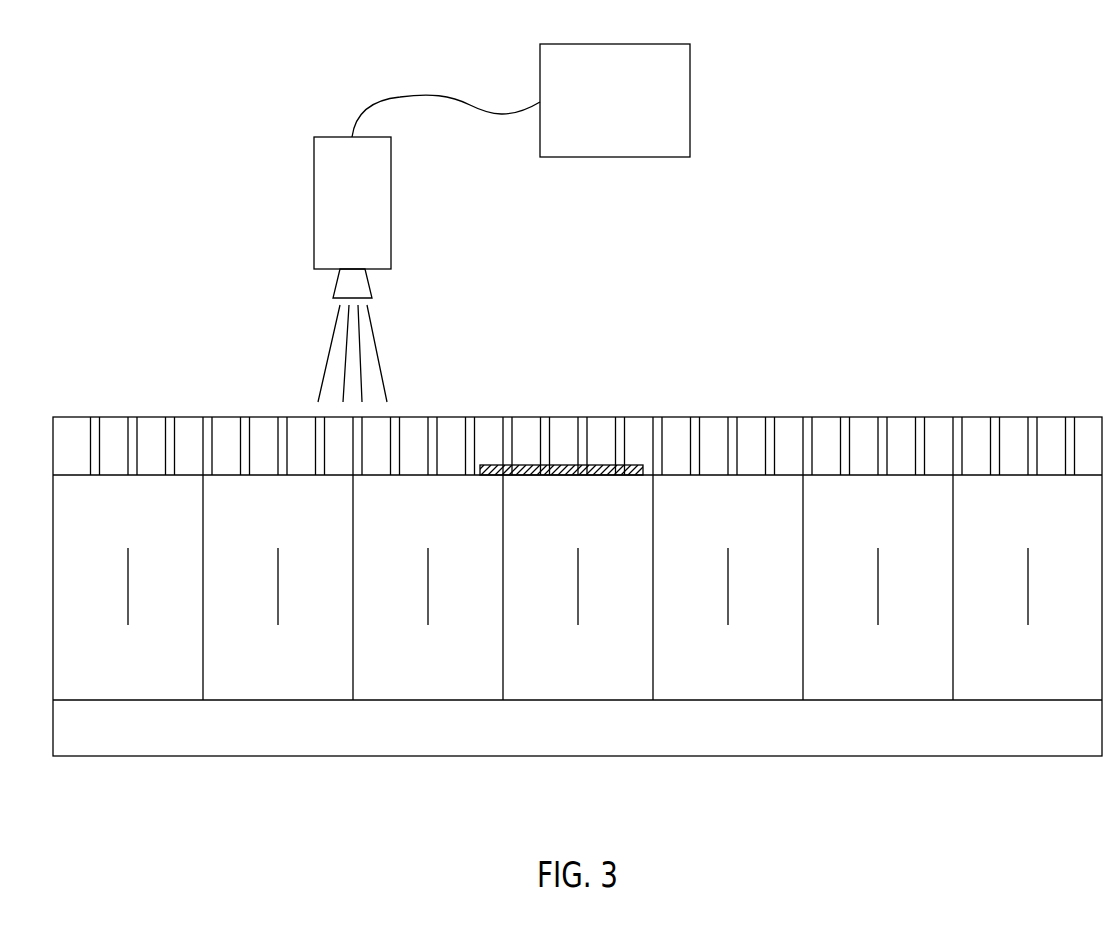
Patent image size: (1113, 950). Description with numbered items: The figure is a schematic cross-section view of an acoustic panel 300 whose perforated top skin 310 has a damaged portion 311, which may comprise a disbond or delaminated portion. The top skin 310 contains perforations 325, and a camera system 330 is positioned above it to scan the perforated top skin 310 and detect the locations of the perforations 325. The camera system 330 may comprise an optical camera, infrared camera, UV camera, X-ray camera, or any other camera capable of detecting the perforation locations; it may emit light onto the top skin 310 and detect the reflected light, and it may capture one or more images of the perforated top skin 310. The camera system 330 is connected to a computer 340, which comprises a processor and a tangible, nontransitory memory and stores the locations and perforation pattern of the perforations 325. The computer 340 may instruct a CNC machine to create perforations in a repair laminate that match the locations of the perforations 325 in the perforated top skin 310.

The acoustic panel 300 is at (996, 121).
The perforated top skin 310 is at (933, 417).
The damaged portion 311 is at (558, 467).
The perforations 325 is at (212, 445).
The camera system 330 is at (314, 195).
The computer 340 is at (690, 101).